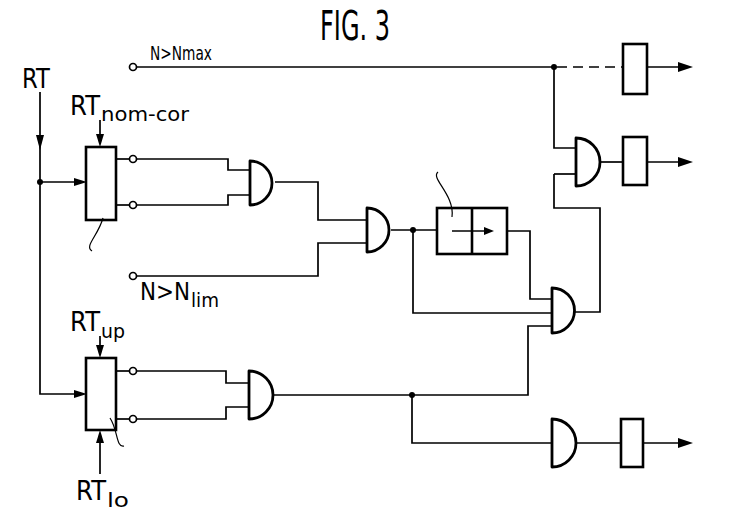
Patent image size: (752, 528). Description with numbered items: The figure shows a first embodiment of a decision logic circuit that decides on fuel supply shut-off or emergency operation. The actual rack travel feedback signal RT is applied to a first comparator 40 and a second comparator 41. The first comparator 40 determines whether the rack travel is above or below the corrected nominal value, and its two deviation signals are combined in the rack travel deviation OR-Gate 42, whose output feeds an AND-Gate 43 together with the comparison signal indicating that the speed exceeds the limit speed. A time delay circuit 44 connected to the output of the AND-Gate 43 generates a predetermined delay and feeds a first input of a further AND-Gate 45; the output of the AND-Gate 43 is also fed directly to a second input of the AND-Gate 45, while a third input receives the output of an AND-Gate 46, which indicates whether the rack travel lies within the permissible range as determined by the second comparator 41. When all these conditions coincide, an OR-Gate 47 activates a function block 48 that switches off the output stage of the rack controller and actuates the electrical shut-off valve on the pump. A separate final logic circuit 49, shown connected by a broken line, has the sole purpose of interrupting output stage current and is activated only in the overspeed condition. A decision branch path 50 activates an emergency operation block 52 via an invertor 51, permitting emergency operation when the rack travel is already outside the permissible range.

The first comparator 40 is at (100, 200).
The second comparator 41 is at (97, 414).
The rack travel deviation OR-Gate 42 is at (262, 180).
The AND-Gate 43 is at (374, 222).
The time delay circuit 44 is at (480, 218).
The further AND-Gate 45 is at (562, 302).
The AND-Gate 46 is at (262, 392).
The OR-Gate 47 is at (586, 156).
The function block 48 is at (636, 160).
The final logic circuit 49 is at (640, 64).
The decision branch path 50 is at (458, 444).
The invertor 51 is at (566, 434).
The emergency operation block 52 is at (632, 432).